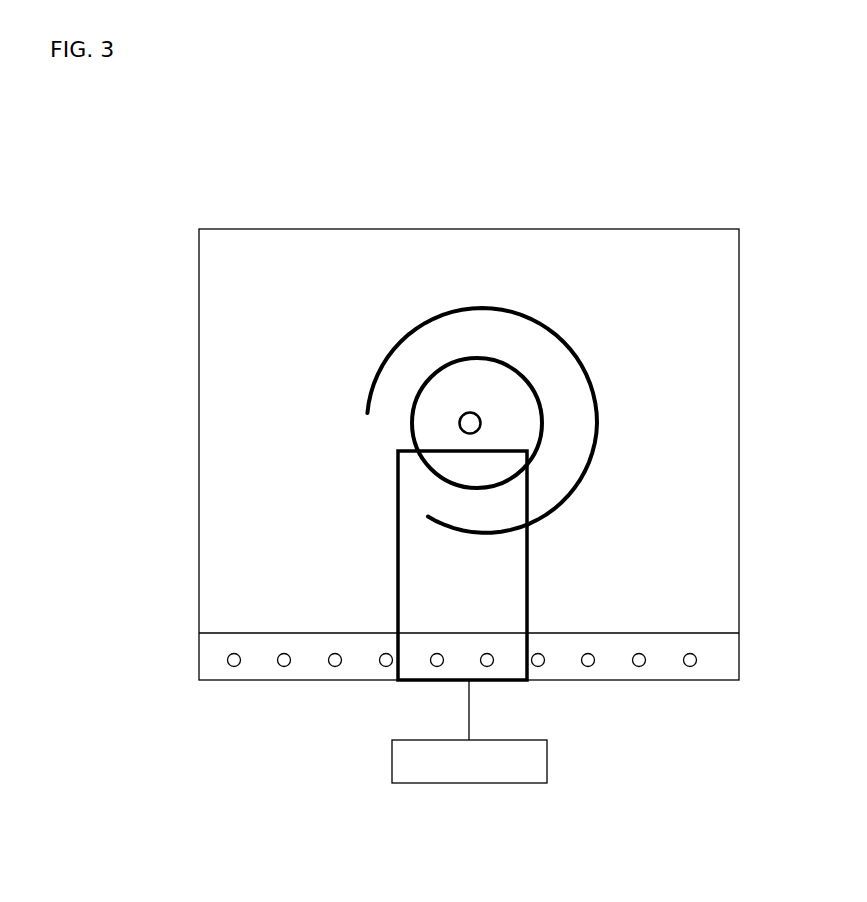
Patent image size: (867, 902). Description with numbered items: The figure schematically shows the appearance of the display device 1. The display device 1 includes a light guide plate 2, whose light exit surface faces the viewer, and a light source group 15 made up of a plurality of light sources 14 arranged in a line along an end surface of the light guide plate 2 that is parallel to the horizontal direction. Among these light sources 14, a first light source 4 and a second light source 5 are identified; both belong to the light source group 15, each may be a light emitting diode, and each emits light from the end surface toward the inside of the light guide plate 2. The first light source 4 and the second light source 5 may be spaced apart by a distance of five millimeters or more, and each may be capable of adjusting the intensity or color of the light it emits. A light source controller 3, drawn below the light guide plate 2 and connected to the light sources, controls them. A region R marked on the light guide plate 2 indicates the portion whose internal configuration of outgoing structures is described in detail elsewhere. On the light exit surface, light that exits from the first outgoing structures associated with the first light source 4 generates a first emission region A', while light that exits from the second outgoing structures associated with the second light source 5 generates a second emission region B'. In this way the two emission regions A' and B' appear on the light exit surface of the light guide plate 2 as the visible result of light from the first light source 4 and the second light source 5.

The display device 1 is at (226, 161).
The light guide plate 2 is at (617, 229).
The light source controller 3 is at (480, 785).
The first light source 4 is at (436, 667).
The second light source 5 is at (488, 667).
The light sources 14 is at (233, 667).
The light source group 15 is at (740, 655).
The region R is at (396, 547).
The first emission region A' is at (477, 331).
The second emission region B' is at (575, 420).